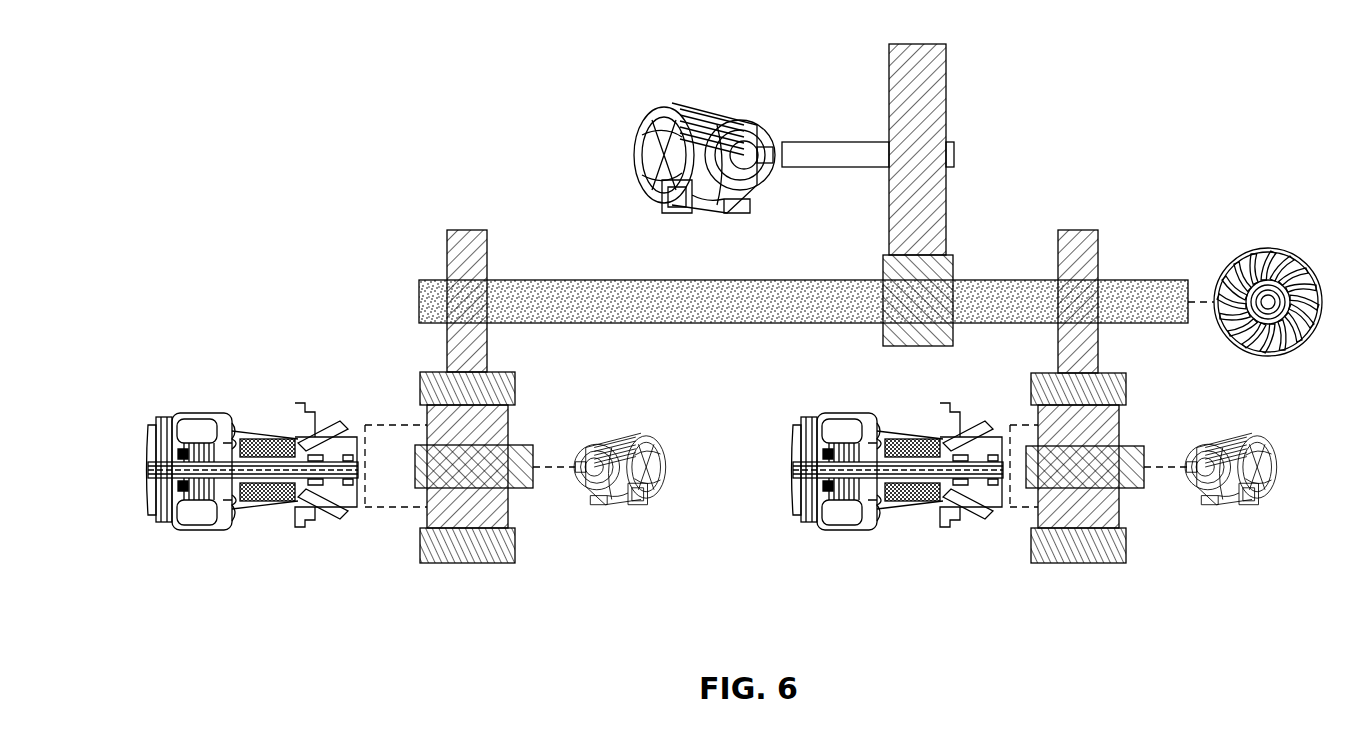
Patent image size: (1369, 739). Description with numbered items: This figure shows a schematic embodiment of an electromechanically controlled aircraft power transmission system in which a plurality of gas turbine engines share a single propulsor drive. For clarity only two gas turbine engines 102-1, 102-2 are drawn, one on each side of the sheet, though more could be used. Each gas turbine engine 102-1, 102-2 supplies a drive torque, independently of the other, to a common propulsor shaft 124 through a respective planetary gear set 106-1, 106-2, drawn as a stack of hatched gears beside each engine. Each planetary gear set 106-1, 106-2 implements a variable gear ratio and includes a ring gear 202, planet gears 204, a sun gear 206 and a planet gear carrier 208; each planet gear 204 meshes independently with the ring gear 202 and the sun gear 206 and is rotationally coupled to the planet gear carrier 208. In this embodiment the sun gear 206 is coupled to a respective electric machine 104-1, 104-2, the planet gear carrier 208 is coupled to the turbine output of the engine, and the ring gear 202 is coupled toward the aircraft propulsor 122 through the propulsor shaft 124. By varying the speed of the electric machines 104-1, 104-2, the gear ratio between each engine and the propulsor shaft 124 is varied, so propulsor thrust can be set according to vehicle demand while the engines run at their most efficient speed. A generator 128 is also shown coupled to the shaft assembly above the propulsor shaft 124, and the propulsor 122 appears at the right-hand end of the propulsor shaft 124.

The gas turbine engine 102-1 is at (889, 556).
The gas turbine engine 102-2 is at (263, 556).
The electric machine 104-1 is at (1258, 495).
The electric machine 104-2 is at (638, 500).
The planetary gear set 106-1 is at (1078, 582).
The planetary gear set 106-2 is at (815, 443).
The aircraft propulsor 122 is at (1268, 250).
The propulsor shaft 124 is at (662, 280).
The generator 128 is at (693, 96).
The ring gear 202 is at (518, 388).
The planet gear 204 is at (510, 425).
The sun gear 206 is at (533, 482).
The planet gear carrier 208 is at (393, 500).